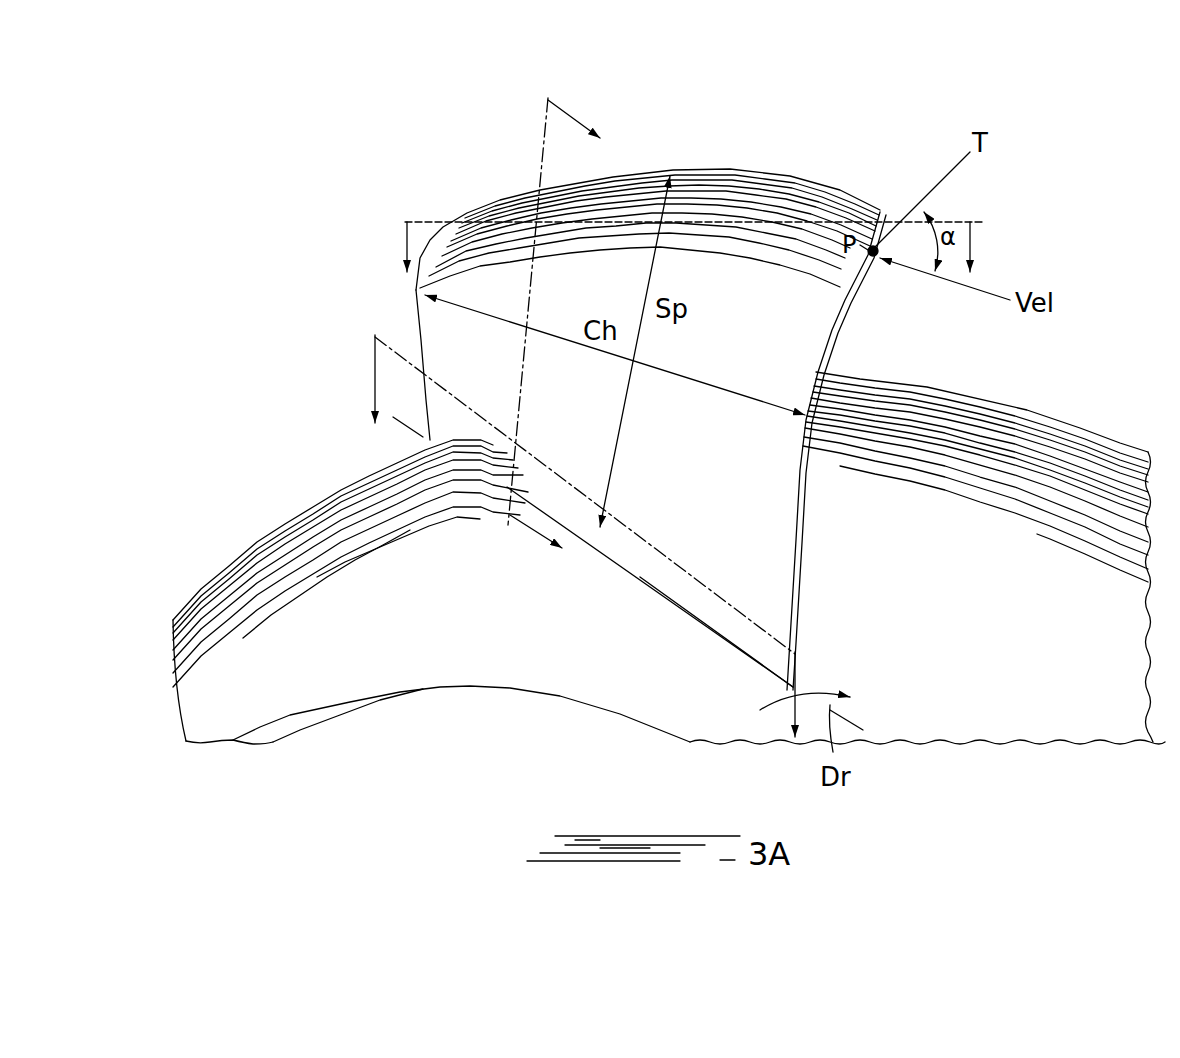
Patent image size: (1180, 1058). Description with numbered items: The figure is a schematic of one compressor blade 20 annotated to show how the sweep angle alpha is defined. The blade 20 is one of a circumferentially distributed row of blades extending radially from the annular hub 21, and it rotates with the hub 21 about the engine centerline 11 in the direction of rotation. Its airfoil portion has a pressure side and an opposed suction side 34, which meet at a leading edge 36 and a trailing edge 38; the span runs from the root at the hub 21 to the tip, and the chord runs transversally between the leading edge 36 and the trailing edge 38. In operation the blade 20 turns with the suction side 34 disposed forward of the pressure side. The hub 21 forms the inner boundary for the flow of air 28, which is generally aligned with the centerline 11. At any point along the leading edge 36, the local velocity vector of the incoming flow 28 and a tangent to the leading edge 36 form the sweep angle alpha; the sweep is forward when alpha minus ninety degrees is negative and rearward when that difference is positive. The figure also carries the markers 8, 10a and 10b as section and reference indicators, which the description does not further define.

The section line / view direction 8- 8 is at (545, 312).
The first reference plane 10a is at (699, 232).
The second reference plane 10b is at (591, 523).
The centerline 11 is at (880, 743).
The blade 20 is at (507, 260).
The annular hub 21 is at (290, 572).
The flow of air 28 is at (873, 262).
The suction side 34 is at (741, 352).
The leading edge 36 is at (800, 563).
The trailing edge 38 is at (418, 367).